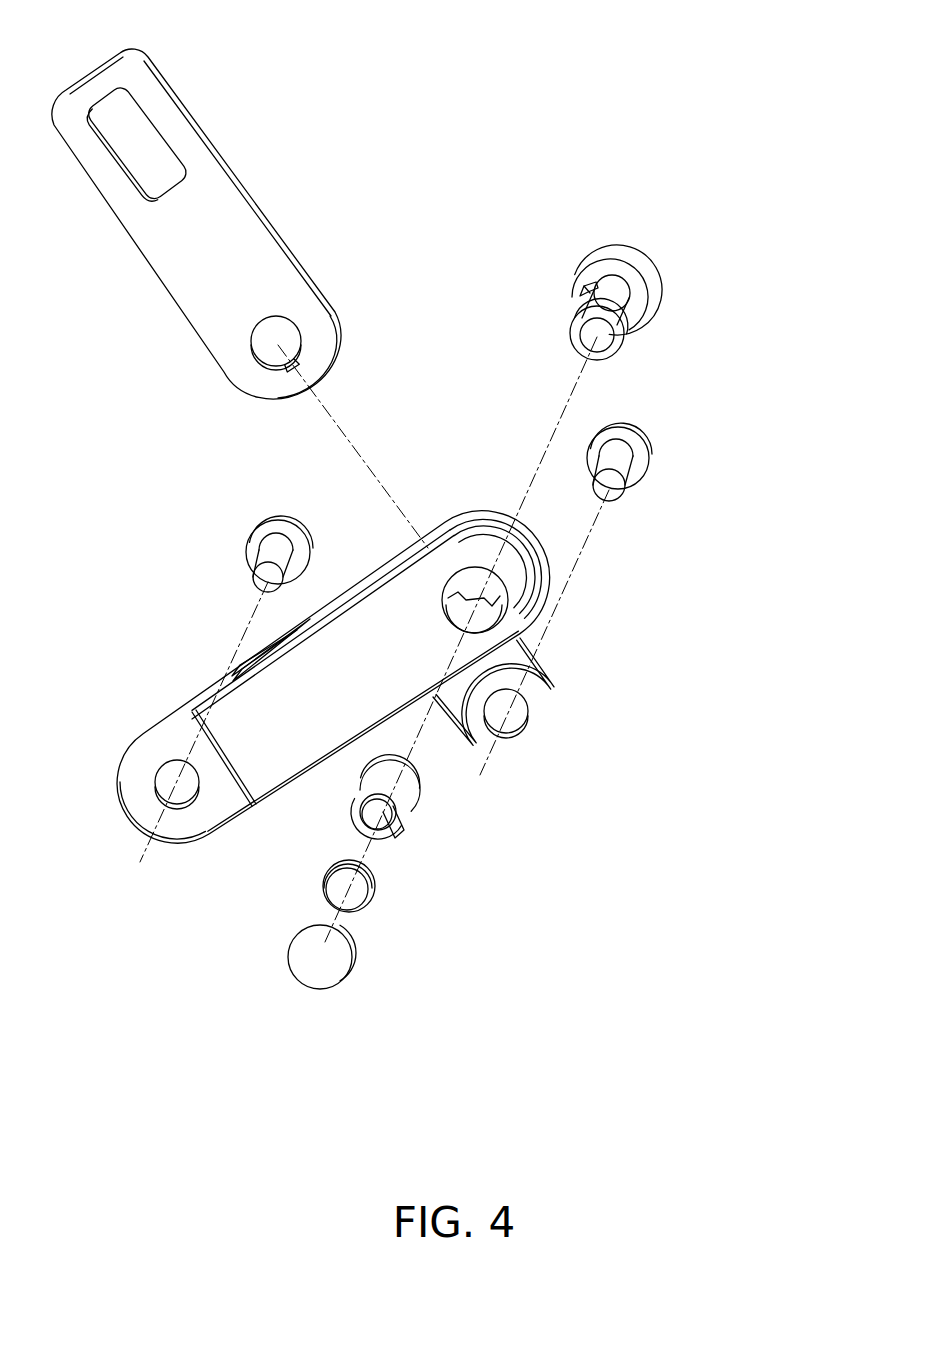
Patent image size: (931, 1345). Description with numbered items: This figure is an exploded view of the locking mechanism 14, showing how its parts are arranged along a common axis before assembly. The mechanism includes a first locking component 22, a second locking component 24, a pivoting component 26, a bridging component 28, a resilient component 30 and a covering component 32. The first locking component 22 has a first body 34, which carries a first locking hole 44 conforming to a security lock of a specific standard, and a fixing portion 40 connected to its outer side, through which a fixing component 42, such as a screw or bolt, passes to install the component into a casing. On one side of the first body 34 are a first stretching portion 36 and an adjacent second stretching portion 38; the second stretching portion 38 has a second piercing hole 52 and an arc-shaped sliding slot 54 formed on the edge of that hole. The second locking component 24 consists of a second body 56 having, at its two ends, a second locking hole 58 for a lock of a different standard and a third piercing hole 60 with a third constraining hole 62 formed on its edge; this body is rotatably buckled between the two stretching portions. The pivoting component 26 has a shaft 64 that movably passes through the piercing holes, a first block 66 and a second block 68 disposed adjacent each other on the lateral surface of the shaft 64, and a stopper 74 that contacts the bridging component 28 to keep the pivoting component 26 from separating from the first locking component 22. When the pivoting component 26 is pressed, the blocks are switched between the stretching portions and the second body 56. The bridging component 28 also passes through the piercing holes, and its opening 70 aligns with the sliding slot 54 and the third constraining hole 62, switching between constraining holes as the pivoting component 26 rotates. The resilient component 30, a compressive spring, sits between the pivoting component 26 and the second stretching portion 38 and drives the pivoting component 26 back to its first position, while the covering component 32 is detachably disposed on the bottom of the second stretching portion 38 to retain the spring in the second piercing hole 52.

The locking mechanism 14 is at (770, 62).
The first locking component 22 is at (440, 753).
The second locking component 24 is at (327, 222).
The pivoting component 26 is at (628, 192).
The bridging component 28 is at (412, 787).
The resilient component 30 is at (365, 910).
The covering component 32 is at (337, 973).
The first body 34 is at (363, 588).
The first stretching portion 36 is at (497, 517).
The second stretching portion 38 is at (476, 536).
The fixing portion 40 is at (533, 743).
The fixing component 42 is at (640, 463).
The first locking hole 44 is at (265, 645).
The second piercing hole 52 is at (500, 580).
The sliding slot 54 is at (497, 643).
The second body 56 is at (240, 215).
The second locking hole 58 is at (140, 160).
The third piercing hole 60 is at (265, 342).
The third constraining hole 62 is at (293, 355).
The shaft 64 is at (620, 290).
The first block 66 is at (592, 297).
The second block 68 is at (578, 296).
The opening 70 is at (405, 842).
The stopper 74 is at (570, 327).